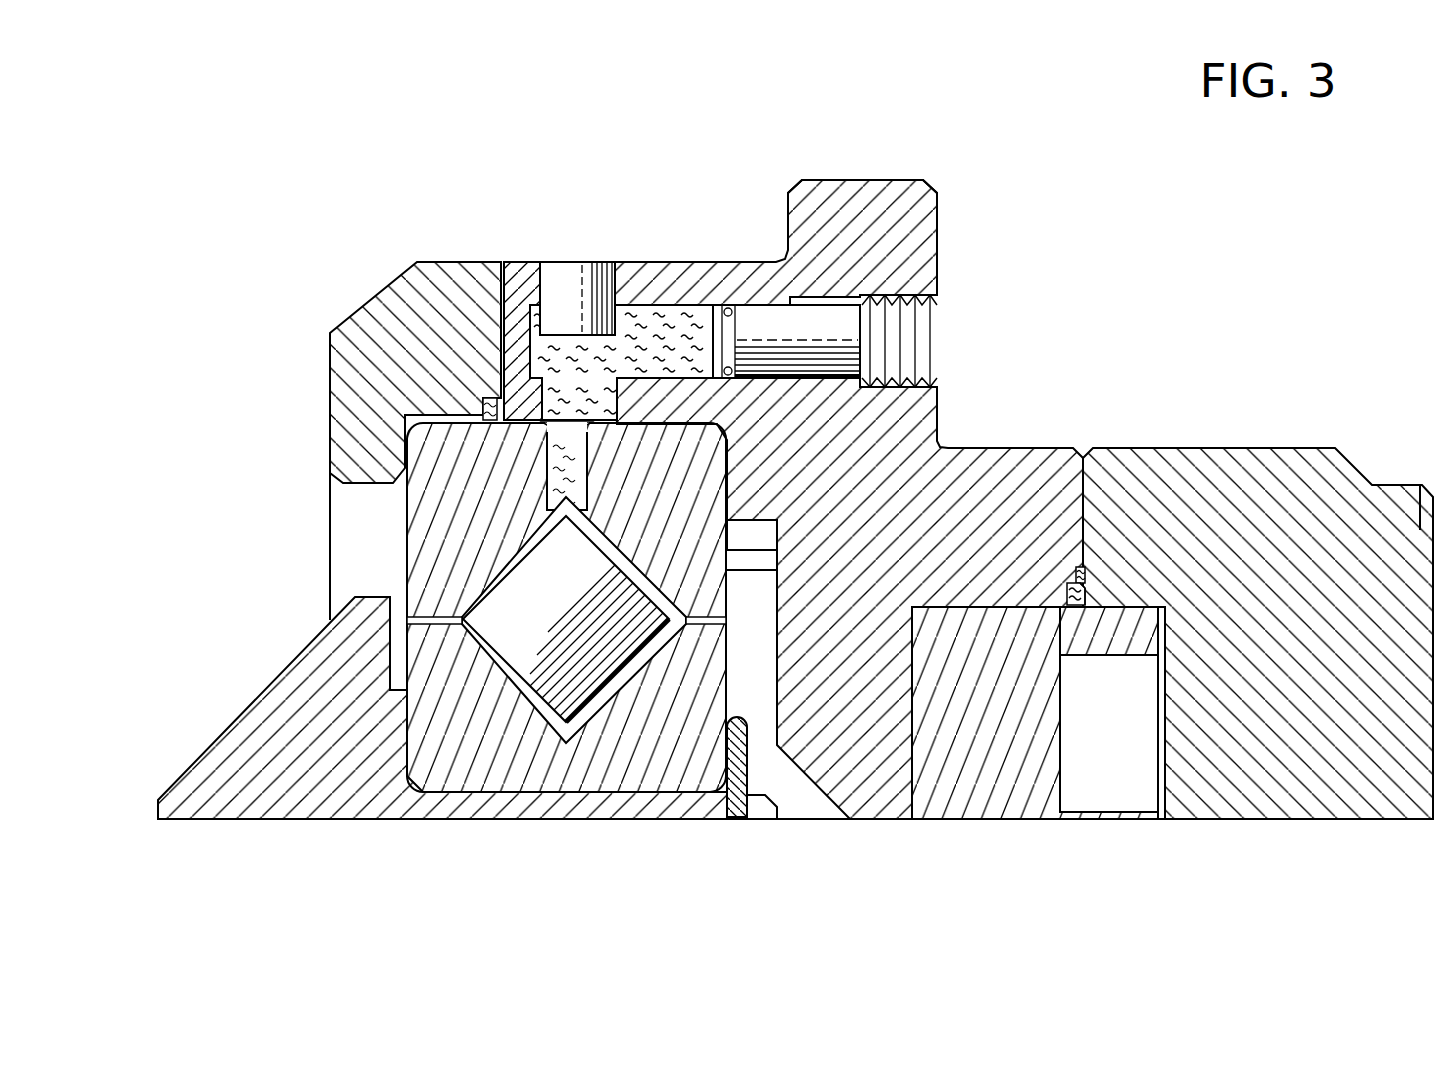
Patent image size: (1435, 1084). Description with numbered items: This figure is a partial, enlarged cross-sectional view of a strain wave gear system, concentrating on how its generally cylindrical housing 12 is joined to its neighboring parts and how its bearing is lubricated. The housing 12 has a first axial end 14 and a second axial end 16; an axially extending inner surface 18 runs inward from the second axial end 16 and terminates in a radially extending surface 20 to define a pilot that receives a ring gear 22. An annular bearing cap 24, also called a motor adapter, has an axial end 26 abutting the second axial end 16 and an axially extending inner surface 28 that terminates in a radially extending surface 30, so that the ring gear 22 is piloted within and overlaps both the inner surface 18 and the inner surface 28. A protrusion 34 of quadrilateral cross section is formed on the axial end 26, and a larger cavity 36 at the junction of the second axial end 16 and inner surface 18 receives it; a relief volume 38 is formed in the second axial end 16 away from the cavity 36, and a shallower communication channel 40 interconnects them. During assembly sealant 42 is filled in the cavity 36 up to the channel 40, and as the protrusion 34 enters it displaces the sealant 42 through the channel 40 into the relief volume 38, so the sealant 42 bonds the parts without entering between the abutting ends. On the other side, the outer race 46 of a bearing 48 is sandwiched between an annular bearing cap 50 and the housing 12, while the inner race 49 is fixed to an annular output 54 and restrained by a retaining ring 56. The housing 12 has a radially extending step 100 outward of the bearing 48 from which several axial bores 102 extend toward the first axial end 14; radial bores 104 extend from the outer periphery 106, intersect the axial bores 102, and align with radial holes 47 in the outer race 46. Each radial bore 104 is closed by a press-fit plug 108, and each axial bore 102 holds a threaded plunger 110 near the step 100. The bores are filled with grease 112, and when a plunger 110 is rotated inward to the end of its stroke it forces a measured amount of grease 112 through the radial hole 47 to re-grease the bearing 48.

The radially extending step 100 is at (940, 218).
The housing 12 is at (833, 182).
The outer periphery 106 is at (660, 260).
The annular bearing cap 50 is at (352, 328).
The first axial end 14 is at (500, 323).
The radial bores 104 is at (545, 390).
The annular mount or output 54 is at (210, 805).
The outer race 46 is at (415, 508).
The radial holes 47 is at (555, 453).
The bearing 48 is at (493, 768).
The inner race 49 is at (598, 768).
The plug 108 is at (566, 278).
The axial bores 102 is at (680, 318).
The grease 112 is at (555, 345).
The plunger 110 is at (838, 325).
The retaining ring 56 is at (736, 782).
The axially extending inner surface 18 is at (976, 612).
The radially extending surface 20 is at (910, 742).
The ring gear 22 is at (1045, 795).
The sealant 42 is at (1070, 600).
The axially extending inner surface 28 is at (1110, 612).
The radially extending surface 30 is at (1166, 762).
The second axial end 16 is at (1084, 533).
The annular bearing cap 24 is at (1350, 772).
The relief volume 38 is at (1079, 582).
The cavity 36 is at (1072, 586).
The axial end 26 is at (1088, 578).
The communication channel 40 is at (1088, 590).
The protrusion 34 is at (1088, 601).